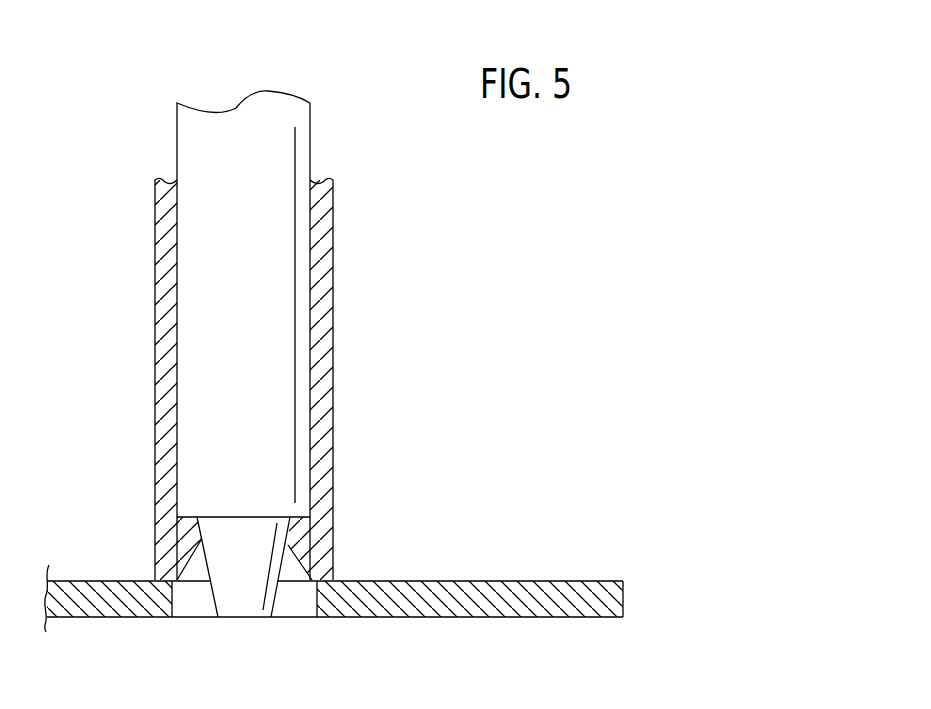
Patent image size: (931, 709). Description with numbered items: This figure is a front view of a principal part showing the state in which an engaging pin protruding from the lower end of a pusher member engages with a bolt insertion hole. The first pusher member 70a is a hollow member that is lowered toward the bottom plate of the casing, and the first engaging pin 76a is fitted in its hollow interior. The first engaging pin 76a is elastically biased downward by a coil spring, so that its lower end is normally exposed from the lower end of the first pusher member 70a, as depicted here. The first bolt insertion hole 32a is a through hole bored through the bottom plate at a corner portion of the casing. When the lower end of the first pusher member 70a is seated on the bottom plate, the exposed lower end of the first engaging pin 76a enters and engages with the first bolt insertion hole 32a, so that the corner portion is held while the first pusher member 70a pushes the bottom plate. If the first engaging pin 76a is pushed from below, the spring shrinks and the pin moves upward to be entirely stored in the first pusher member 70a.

The first bolt insertion hole 32a is at (173, 593).
The first pusher member 70a is at (323, 350).
The first engaging pin 76a is at (274, 418).